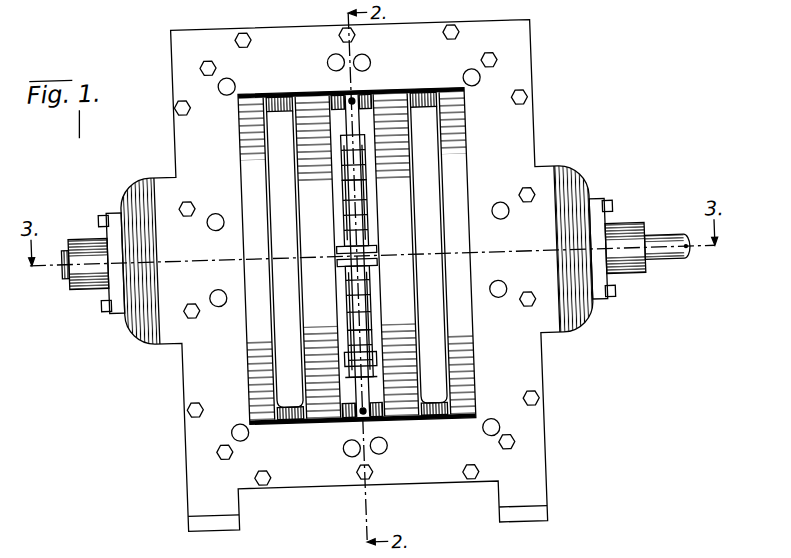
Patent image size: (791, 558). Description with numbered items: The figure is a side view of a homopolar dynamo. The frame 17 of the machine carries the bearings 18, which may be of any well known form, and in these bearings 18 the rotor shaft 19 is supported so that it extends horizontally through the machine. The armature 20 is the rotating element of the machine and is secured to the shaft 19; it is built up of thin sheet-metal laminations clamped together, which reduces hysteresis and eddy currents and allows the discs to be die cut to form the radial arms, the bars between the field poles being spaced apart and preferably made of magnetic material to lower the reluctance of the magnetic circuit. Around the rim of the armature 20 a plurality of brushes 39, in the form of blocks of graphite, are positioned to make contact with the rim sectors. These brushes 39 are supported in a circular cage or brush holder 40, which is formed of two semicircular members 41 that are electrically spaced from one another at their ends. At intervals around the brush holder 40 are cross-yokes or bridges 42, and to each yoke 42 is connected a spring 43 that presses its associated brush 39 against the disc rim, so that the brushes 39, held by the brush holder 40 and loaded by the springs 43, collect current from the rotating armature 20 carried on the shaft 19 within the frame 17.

The frame 17 is at (520, 465).
The bearings 18 is at (97, 234).
The rotor shaft 19 is at (62, 266).
The armature 20 is at (368, 258).
The brushes 39 is at (363, 187).
The brush holder 40 is at (360, 353).
The semicircular members 41 is at (367, 338).
The cross-yokes 42 is at (366, 180).
The spring 43 is at (368, 320).